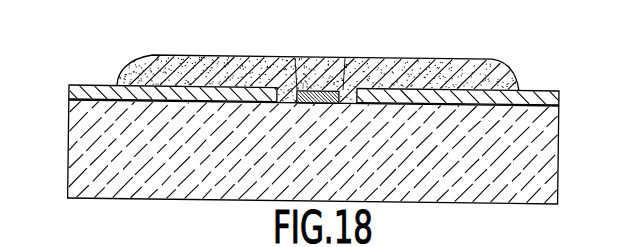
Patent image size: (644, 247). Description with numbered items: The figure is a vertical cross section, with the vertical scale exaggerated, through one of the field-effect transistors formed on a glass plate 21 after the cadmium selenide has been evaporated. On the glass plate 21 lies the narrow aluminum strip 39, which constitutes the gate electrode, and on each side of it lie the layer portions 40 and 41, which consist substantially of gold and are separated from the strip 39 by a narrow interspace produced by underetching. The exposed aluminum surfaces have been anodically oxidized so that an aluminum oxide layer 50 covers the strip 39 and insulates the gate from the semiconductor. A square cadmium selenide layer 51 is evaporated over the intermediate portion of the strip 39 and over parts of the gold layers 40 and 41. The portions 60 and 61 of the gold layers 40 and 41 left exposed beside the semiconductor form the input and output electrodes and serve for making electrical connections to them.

The glass plate 21 is at (106, 137).
The exposed portion of gold layer 40 60 is at (100, 93).
The exposed portion of gold layer 41 61 is at (538, 100).
The narrow strip 39 is at (338, 89).
The gold layer portion 40 is at (165, 90).
The gold layer portion 41 is at (461, 59).
The aluminum oxide layer 50 is at (294, 89).
The cadmium selenide layer 51 is at (392, 58).